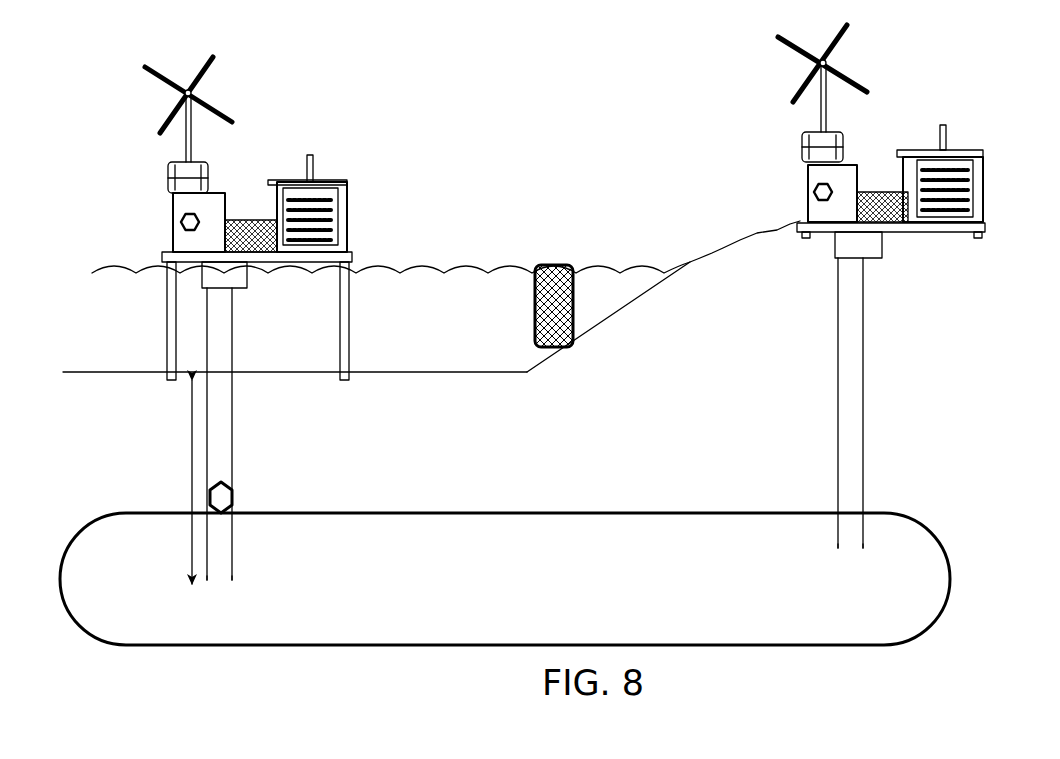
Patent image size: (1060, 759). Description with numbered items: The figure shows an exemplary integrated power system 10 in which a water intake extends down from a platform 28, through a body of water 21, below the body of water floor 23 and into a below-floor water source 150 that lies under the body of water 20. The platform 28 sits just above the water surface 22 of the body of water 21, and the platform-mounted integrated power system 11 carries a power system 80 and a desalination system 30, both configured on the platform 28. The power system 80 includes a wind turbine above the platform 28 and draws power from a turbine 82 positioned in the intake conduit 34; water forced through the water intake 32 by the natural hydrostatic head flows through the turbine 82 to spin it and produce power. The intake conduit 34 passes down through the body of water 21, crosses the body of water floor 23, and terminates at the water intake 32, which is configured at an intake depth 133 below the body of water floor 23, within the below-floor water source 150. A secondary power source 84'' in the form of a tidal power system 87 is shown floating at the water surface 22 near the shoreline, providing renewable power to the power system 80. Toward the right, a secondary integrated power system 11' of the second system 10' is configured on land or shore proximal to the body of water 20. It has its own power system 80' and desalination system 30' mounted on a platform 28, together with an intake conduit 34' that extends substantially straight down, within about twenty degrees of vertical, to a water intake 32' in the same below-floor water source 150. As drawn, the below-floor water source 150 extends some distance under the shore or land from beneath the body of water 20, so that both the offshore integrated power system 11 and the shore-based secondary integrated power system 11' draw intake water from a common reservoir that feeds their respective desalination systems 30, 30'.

The integrated power system 10 is at (526, 56).
The second integrated power system 10' is at (1003, 60).
The integrated power system 11 is at (179, 193).
The secondary integrated power system 11' is at (814, 161).
The water source 20 is at (432, 338).
The body of water 21 is at (397, 285).
The water surface 22 is at (475, 268).
The body of water floor 23 is at (468, 368).
The platform 28 is at (170, 253).
The desalination system 30 is at (340, 194).
The desalination system 30' is at (974, 165).
The water intake 32 is at (253, 589).
The water intake 32' is at (885, 558).
The intake conduit 34 is at (250, 421).
The intake conduit 34' is at (885, 390).
The power system 80 is at (229, 109).
The power system 80' is at (865, 78).
The turbine 82 is at (232, 481).
The secondary power source 84'' is at (599, 248).
The tidal power system 87 is at (555, 265).
The intake depth 133 is at (188, 438).
The below-floor water source 150 is at (337, 537).